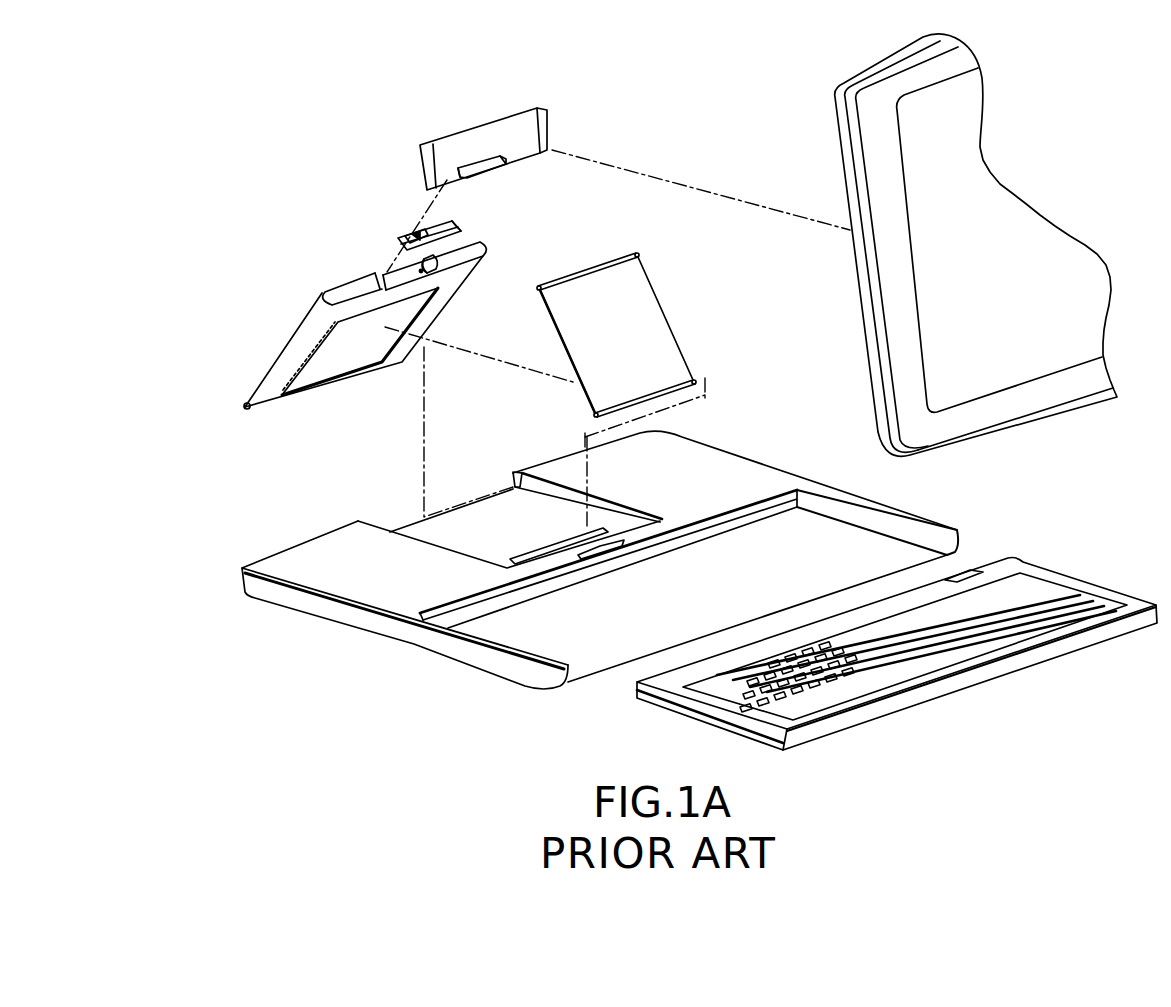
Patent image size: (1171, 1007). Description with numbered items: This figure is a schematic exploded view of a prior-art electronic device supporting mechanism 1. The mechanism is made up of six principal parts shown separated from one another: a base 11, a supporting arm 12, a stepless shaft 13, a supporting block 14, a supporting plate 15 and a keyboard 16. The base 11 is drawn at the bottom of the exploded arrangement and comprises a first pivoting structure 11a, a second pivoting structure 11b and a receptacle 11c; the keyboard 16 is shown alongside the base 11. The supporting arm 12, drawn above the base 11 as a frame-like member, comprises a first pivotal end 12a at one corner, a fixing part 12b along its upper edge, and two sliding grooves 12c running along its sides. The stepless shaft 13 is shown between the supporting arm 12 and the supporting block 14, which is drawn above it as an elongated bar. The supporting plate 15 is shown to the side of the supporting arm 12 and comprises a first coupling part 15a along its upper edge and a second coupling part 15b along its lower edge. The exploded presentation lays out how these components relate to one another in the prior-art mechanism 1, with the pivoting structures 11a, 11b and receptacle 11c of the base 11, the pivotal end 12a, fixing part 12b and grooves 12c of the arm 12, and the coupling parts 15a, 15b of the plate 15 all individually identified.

The electronic device supporting mechanism 1 is at (1105, 79).
The base 11 is at (606, 550).
The first pivoting structure 11a is at (527, 470).
The second pivoting structure 11b is at (545, 547).
The receptacle 11c is at (867, 547).
The supporting arm 12 is at (335, 341).
The first pivotal end 12a is at (245, 405).
The fixing part 12b is at (403, 276).
The sliding grooves 12c is at (295, 383).
The stepless shaft 13 is at (458, 216).
The supporting block 14 is at (480, 140).
The supporting plate 15 is at (650, 315).
The first coupling part 15a is at (637, 258).
The second coupling part 15b is at (692, 378).
The keyboard 16 is at (1068, 583).